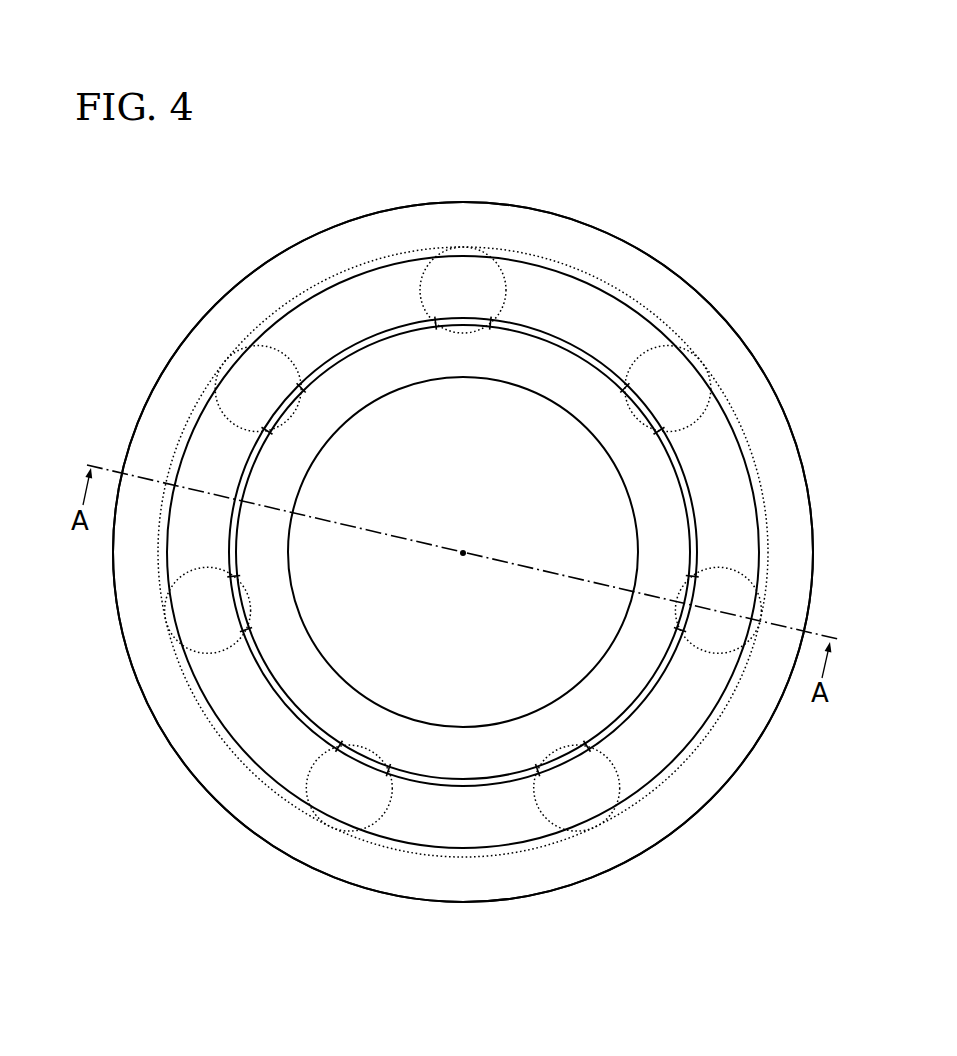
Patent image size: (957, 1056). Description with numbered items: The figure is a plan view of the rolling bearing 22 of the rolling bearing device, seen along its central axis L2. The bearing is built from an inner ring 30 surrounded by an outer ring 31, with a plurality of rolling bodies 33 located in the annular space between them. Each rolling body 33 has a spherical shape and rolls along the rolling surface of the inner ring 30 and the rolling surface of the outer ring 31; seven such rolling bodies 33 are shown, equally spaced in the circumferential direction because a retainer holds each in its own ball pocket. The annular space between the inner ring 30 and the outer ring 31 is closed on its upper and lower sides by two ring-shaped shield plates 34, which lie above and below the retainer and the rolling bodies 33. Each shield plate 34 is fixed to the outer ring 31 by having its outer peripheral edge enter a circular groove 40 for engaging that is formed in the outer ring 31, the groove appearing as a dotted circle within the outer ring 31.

The rolling bearing 22 is at (754, 216).
The inner ring 30 is at (373, 347).
The outer ring 31 is at (645, 264).
The rolling body 33 is at (282, 360).
The shield plate 34 is at (545, 285).
The circular groove 40 is at (737, 407).
The central axis of bearing L2 is at (463, 556).